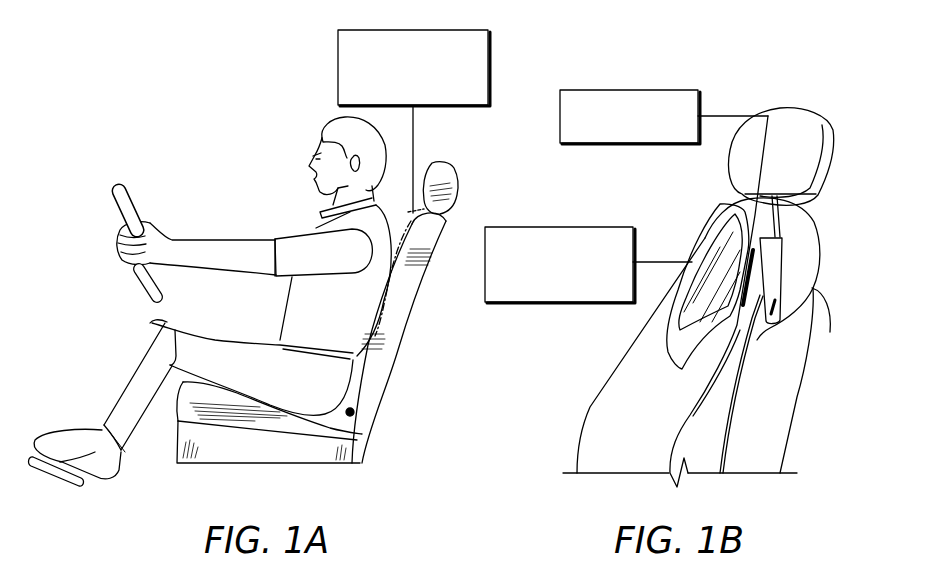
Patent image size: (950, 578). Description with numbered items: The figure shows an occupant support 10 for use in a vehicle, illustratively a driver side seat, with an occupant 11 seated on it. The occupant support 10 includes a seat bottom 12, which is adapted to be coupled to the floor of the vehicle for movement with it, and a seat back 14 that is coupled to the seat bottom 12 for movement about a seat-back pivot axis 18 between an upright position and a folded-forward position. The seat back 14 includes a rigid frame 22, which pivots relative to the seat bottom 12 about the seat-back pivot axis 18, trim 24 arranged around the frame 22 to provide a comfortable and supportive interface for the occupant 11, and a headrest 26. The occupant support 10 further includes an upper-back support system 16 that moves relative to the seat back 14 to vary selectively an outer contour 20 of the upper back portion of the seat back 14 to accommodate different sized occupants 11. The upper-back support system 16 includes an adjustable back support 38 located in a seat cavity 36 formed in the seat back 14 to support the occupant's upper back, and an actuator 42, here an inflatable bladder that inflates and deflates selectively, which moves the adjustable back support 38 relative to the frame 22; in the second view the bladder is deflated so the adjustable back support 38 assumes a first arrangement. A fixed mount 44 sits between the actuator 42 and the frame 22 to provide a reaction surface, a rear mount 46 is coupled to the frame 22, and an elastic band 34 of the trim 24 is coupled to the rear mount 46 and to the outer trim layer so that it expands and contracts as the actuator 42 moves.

In FIG. 1A, the occupant support 10 is at (470, 143).
In FIG. 1B, the occupant support 10 is at (792, 84).
In FIG. 1A, the occupant 11 is at (318, 235).
In FIG. 1A, the seat bottom 12 is at (248, 432).
In FIG. 1A, the seat back 14 is at (403, 324).
In FIG. 1B, the seat back 14 is at (799, 398).
In FIG. 1A, the upper-back support system 16 is at (338, 52).
In FIG. 1B, the upper-back support system 16 is at (782, 197).
In FIG. 1A, the seat-back pivot axis 18 is at (354, 414).
In FIG. 1A, the outer contour 20 is at (409, 218).
In FIG. 1B, the outer contour 20 is at (695, 249).
In FIG. 1B, the frame 22 is at (727, 440).
In FIG. 1B, the trim 24 is at (590, 407).
In FIG. 1A, the headrest 26 is at (457, 194).
In FIG. 1B, the headrest 26 is at (781, 111).
In FIG. 1B, the elastic band 34 is at (778, 318).
In FIG. 1B, the seat cavity 36 is at (650, 367).
In FIG. 1B, the adjustable back support 38 is at (558, 227).
In FIG. 1B, the actuator 42 is at (627, 90).
In FIG. 1B, the fixed mount 44 is at (763, 333).
In FIG. 1B, the rear mount 46 is at (826, 300).